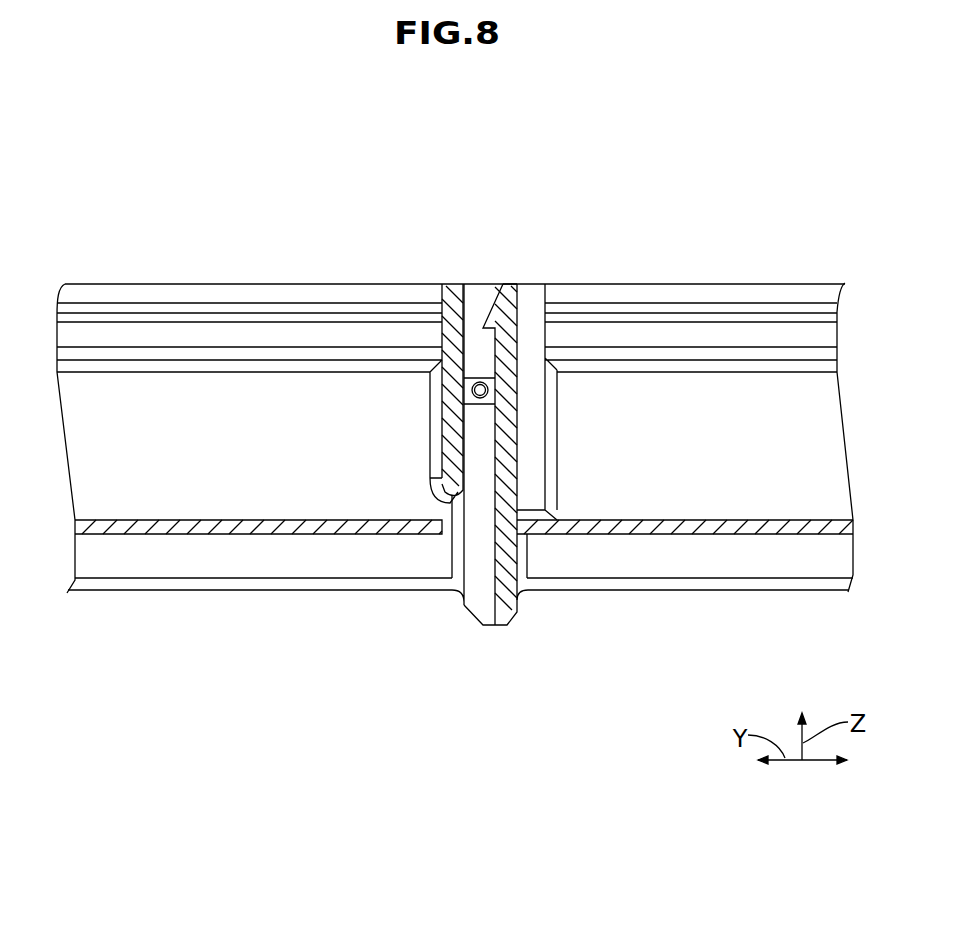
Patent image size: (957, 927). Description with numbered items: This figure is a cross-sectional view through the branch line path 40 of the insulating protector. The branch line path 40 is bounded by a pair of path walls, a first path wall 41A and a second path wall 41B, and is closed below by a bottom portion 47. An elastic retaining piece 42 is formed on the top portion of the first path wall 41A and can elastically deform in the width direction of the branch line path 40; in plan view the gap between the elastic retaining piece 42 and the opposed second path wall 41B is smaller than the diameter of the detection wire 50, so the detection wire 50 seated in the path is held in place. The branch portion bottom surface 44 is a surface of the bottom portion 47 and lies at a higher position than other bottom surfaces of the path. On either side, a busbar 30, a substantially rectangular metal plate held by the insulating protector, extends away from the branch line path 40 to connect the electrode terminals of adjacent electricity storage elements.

The busbar 30 is at (248, 528).
The branch line path 40 is at (526, 419).
The first path wall 41A is at (500, 354).
The second path wall 41B is at (454, 296).
The elastic retaining piece 42 is at (505, 283).
The branch portion bottom surface 44 is at (474, 405).
The bottom portion 47 is at (477, 552).
The detection wire 50 is at (478, 378).